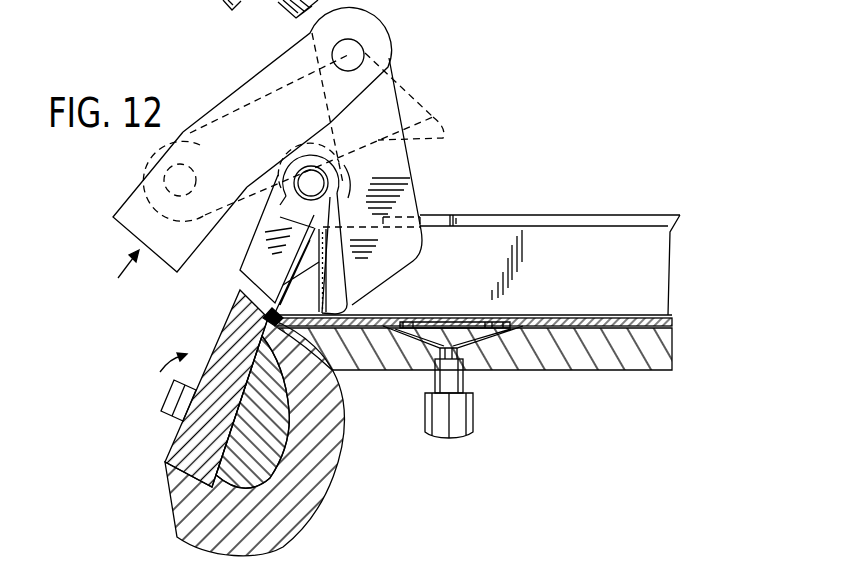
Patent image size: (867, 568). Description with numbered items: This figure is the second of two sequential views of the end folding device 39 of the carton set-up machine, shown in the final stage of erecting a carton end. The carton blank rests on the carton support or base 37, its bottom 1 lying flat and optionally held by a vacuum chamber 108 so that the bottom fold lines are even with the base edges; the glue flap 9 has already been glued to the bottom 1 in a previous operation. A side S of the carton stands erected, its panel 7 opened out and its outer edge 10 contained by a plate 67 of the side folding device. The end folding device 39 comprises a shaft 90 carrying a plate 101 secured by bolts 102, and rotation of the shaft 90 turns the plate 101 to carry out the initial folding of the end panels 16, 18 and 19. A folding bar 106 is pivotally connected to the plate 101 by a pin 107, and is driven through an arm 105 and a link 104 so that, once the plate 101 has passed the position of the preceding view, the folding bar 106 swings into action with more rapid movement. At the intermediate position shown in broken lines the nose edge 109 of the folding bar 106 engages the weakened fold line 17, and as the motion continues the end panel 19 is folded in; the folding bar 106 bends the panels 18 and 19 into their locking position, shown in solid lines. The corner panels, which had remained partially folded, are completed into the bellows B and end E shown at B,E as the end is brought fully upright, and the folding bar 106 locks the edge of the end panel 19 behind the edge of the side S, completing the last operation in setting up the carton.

The arm 105 is at (253, 98).
The end folding device 39 is at (430, 85).
The nose edge 109 is at (446, 119).
The pin 107 is at (306, 181).
The folding bar 106 is at (343, 190).
The link 104 is at (130, 215).
The panel 16 is at (283, 290).
The weakened fold line 17 is at (321, 314).
The panel 18 is at (331, 288).
The end panel 19 is at (350, 315).
The plate 67 is at (503, 222).
The side S is at (580, 222).
The edge 10 is at (609, 220).
The panel 7 is at (568, 280).
The bottom 1 is at (628, 291).
The vacuum chamber 108 is at (487, 338).
The glue flap 9 is at (497, 318).
The carton support or base 37 is at (540, 364).
The plate 101 is at (230, 338).
The bolt 102 is at (170, 402).
The shaft 90 is at (225, 479).
The bellows structure and end B,E is at (330, 276).